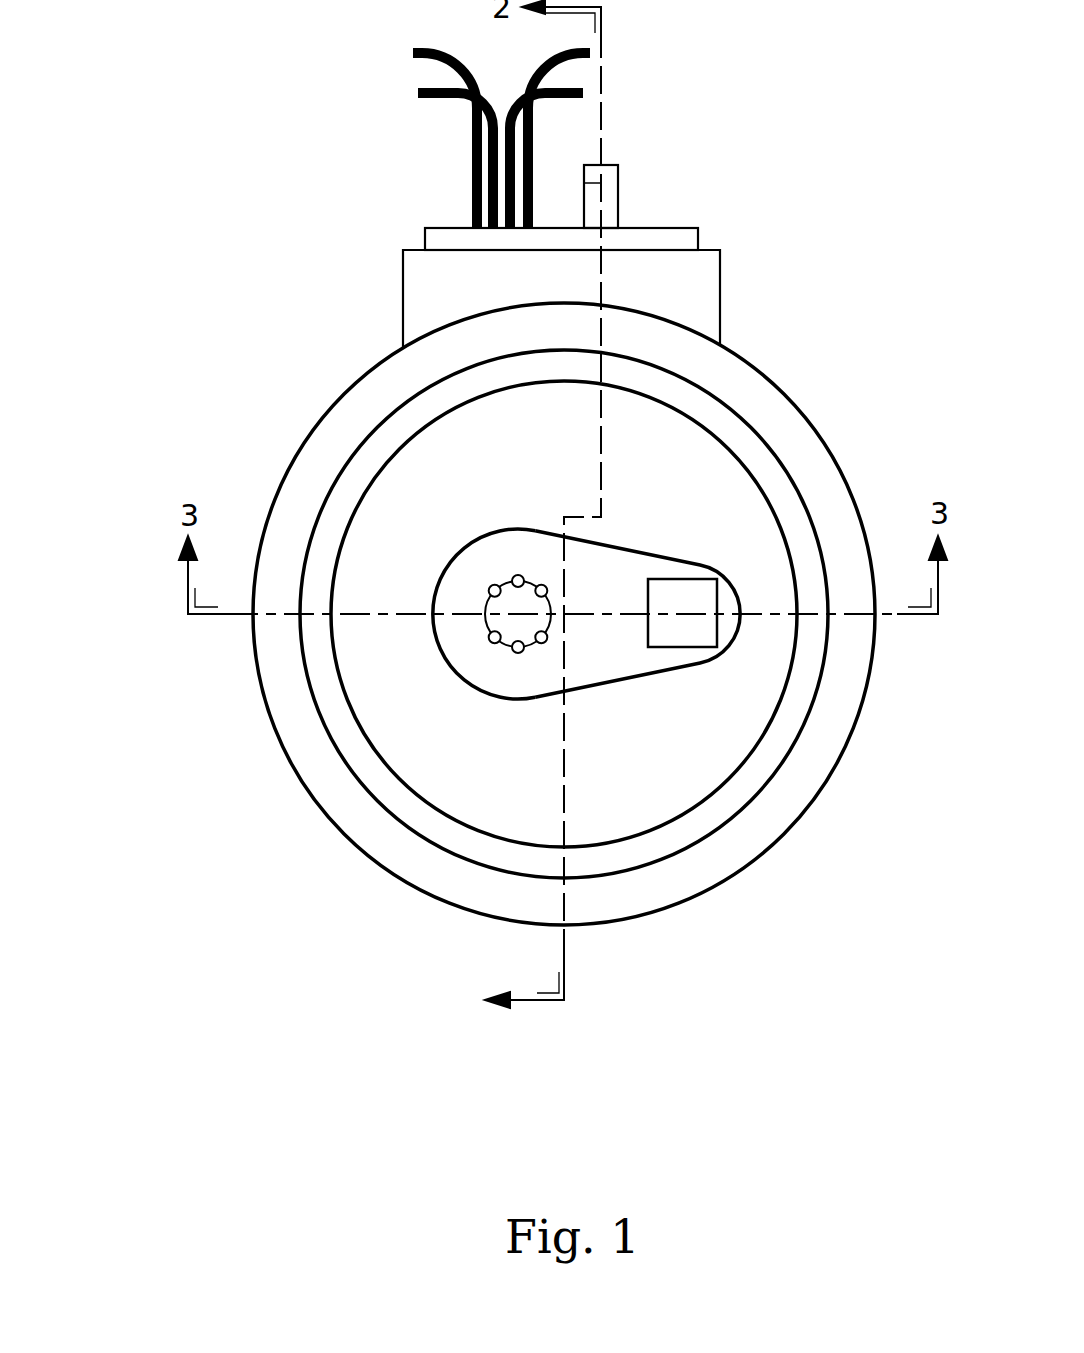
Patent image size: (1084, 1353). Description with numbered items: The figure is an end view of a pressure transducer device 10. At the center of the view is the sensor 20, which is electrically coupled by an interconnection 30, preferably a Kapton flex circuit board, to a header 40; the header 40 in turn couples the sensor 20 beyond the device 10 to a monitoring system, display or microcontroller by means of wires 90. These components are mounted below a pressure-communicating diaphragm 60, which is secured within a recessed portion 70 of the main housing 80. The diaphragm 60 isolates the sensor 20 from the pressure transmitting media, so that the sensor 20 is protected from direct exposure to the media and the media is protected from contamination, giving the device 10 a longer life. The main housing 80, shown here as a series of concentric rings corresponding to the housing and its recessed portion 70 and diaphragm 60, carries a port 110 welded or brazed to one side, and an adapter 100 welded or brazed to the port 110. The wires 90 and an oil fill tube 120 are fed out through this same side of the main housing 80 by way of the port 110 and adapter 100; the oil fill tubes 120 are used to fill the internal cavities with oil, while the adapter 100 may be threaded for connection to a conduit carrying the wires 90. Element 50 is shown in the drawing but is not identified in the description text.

The device 10 is at (182, 203).
The sensor 20 is at (685, 628).
The interconnection 30 is at (617, 580).
The header 40 is at (514, 596).
The counterweight lobe 50 is at (505, 691).
The pressure-communicating diaphragm 60 is at (658, 807).
The recessed portion 70 is at (737, 798).
The main housing 80 is at (812, 763).
The wires 90 is at (472, 143).
The adapter 100 is at (440, 231).
The port 110 is at (428, 300).
The oil fill tubes 120 is at (612, 200).